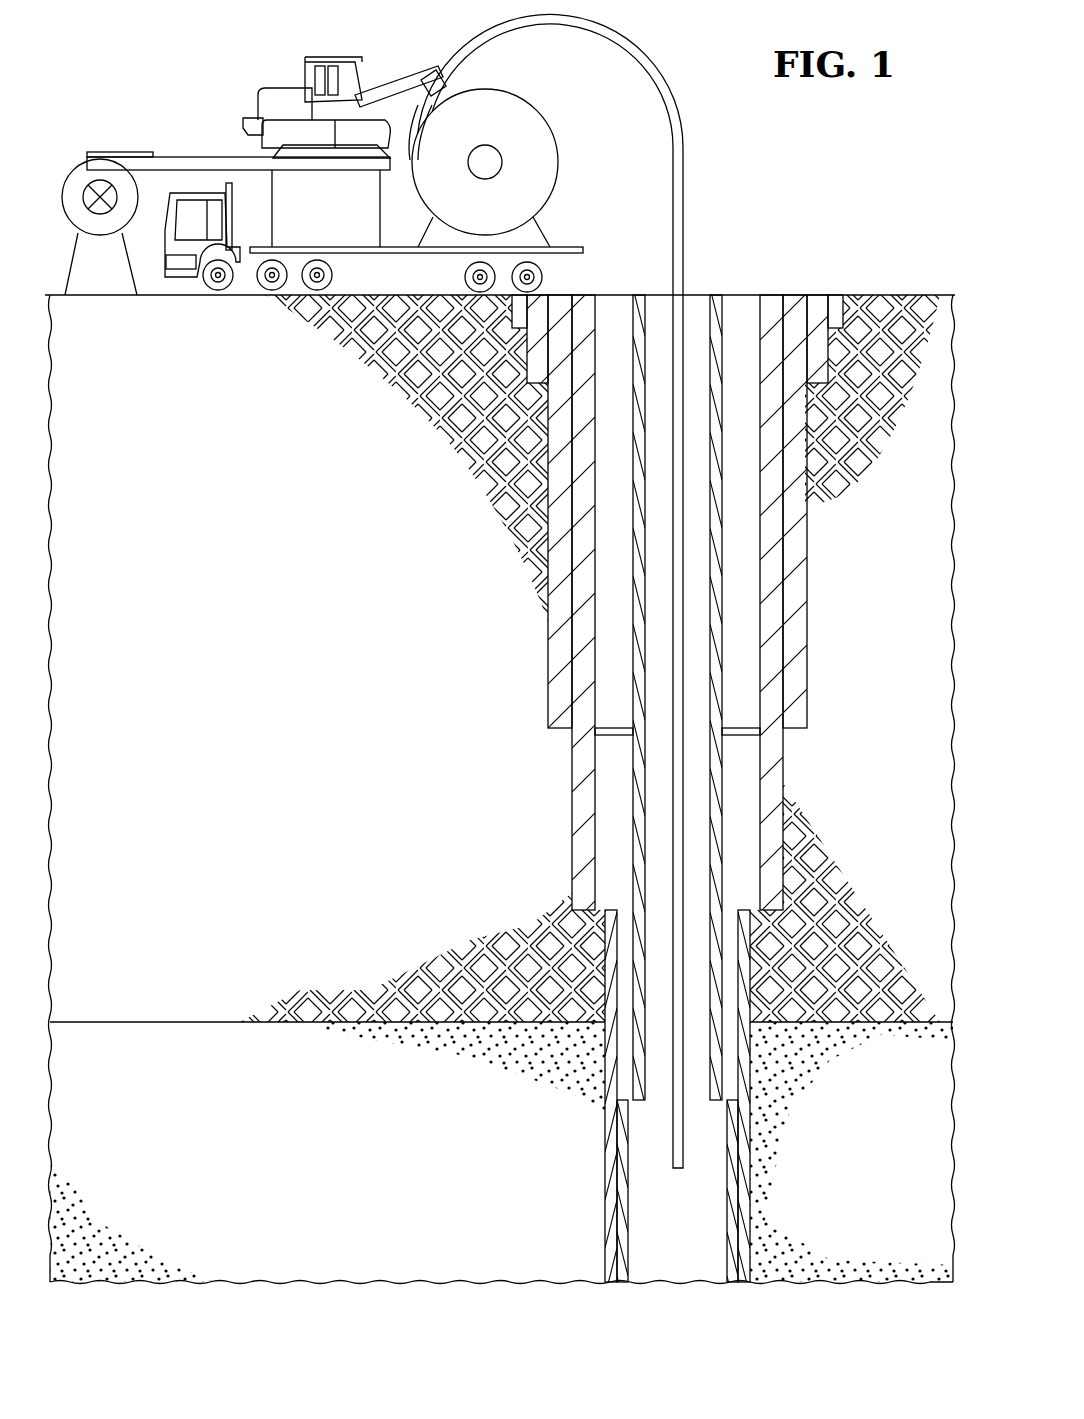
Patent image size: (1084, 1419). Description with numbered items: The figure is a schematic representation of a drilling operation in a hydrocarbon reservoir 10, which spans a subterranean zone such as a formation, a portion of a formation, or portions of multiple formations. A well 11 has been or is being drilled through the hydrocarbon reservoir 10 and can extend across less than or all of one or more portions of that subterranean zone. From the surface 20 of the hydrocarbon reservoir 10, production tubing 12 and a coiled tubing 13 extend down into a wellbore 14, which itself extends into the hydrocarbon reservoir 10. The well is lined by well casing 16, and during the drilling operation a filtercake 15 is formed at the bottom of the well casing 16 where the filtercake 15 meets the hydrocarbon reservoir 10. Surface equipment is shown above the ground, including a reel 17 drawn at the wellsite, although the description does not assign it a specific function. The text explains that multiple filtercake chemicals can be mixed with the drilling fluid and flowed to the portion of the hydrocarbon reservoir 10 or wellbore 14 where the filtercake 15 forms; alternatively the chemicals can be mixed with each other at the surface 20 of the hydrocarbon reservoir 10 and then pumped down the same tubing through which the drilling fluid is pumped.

The hydrocarbon reservoir 10 is at (311, 1172).
The well 11 is at (572, 845).
The production tubing 12 is at (632, 771).
The coiled tubing 13 is at (563, 162).
The wellbore 14 is at (693, 300).
The filtercake 15 is at (628, 1205).
The well casing 16 is at (605, 1145).
The tubing reel 17 is at (98, 156).
The surface 20 is at (880, 296).